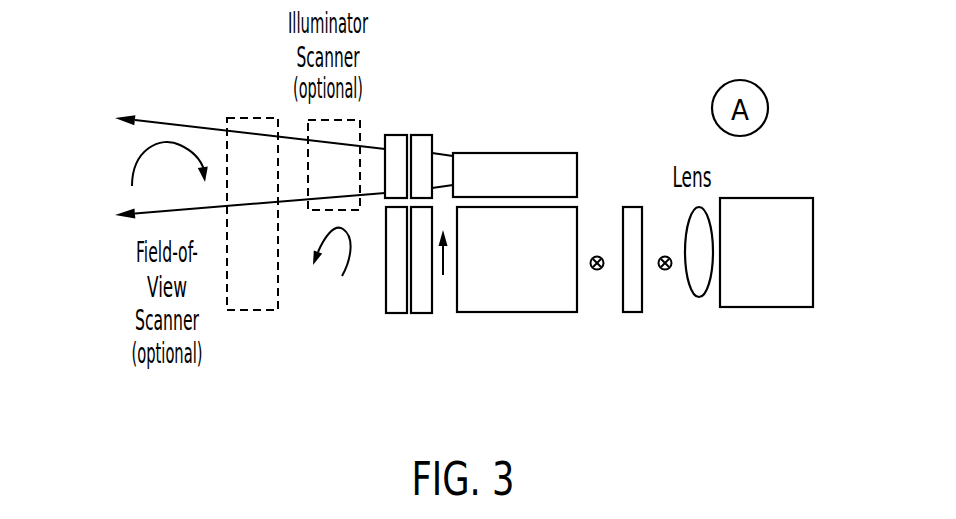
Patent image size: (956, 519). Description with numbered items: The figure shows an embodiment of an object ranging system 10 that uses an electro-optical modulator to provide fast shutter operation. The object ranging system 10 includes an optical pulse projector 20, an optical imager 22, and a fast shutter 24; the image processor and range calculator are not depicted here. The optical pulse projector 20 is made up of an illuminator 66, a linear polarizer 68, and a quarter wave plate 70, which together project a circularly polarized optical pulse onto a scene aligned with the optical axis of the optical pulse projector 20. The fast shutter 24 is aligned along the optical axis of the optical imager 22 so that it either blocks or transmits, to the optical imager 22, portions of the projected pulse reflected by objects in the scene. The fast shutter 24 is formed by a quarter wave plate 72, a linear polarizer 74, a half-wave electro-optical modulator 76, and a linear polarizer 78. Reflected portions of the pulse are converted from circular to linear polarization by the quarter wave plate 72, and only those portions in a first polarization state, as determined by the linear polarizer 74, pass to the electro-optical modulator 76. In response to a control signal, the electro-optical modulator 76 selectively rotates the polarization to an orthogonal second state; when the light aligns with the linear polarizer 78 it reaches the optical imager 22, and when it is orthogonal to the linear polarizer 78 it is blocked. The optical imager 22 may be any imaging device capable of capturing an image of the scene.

The object ranging system 10 is at (808, 93).
The optical pulse projector 20 is at (100, 167).
The optical imager 22 is at (786, 332).
The fast shutter 24 is at (400, 346).
The illuminator 66 is at (553, 153).
The linear polarizer 68 is at (422, 134).
The quarter wave plate 70 is at (385, 197).
The quarter wave plate 72 is at (386, 283).
The linear polarizer 74 is at (411, 240).
The half-wave electro-optical modulator 76 is at (547, 313).
The linear polarizer 78 is at (633, 207).